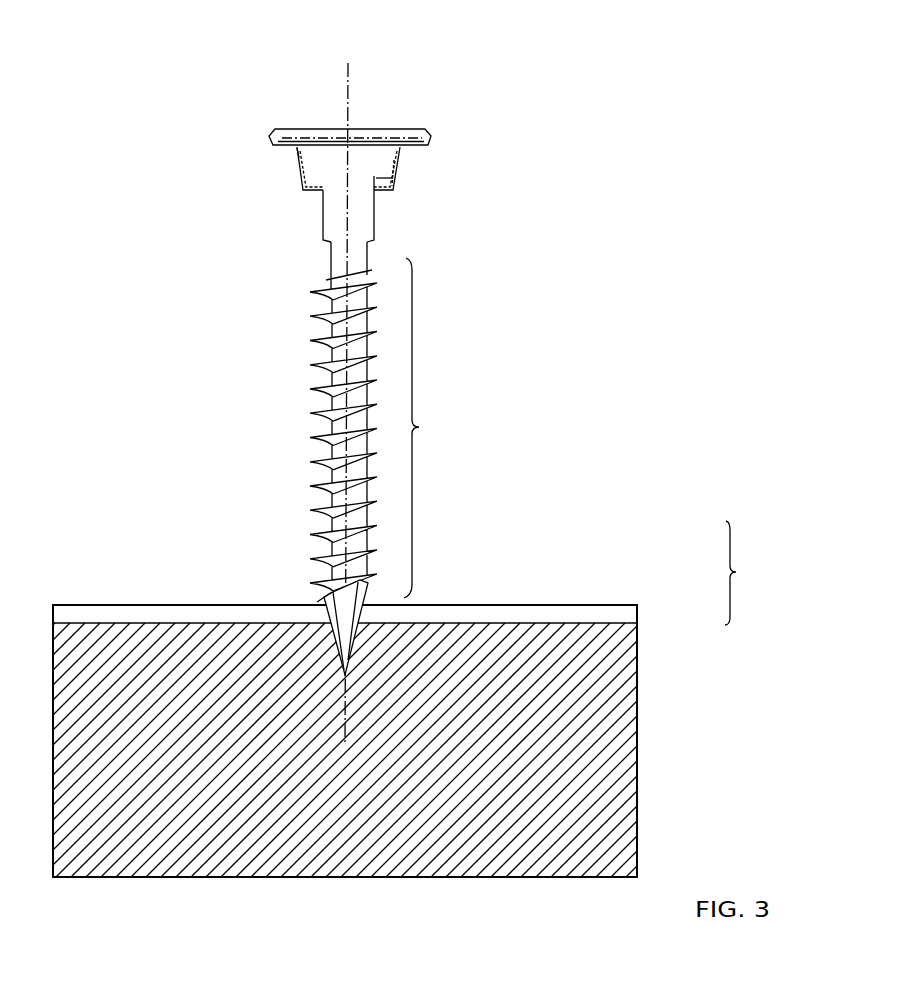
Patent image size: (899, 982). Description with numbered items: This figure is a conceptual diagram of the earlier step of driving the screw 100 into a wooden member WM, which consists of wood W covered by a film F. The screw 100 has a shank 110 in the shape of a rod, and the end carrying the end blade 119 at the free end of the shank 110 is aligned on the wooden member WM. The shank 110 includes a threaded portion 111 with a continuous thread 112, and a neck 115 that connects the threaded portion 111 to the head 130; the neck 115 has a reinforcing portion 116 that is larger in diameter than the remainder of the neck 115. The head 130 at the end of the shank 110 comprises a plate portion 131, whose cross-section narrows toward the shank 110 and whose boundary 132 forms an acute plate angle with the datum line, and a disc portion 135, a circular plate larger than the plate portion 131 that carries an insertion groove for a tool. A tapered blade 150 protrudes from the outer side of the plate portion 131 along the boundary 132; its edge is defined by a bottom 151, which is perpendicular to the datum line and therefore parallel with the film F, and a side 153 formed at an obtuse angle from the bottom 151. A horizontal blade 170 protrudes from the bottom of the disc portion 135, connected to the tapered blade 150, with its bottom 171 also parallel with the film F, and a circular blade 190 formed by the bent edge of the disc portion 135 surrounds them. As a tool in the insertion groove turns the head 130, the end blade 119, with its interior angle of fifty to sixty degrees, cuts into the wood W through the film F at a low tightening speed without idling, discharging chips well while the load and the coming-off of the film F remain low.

The screw 100 is at (213, 76).
The shank 110 is at (402, 432).
The threaded portion 111 is at (347, 428).
The thread 112 is at (322, 485).
The neck 115 is at (337, 262).
The reinforcing portion 116 is at (333, 235).
The end blade 119 is at (322, 592).
The head 130 is at (375, 139).
The plate portion 131 is at (393, 180).
The boundary of the plate portion 132 is at (387, 154).
The disc portion 135 is at (388, 129).
The tapered blade 150 is at (445, 240).
The bottom 151 is at (392, 192).
The side 153 is at (393, 190).
The horizontal blade 170 is at (293, 148).
The bottom of the horizontal blade 171 is at (295, 152).
The circular blade 190 is at (284, 146).
The film F is at (568, 612).
The wood W is at (618, 695).
The wooden member WM is at (756, 573).